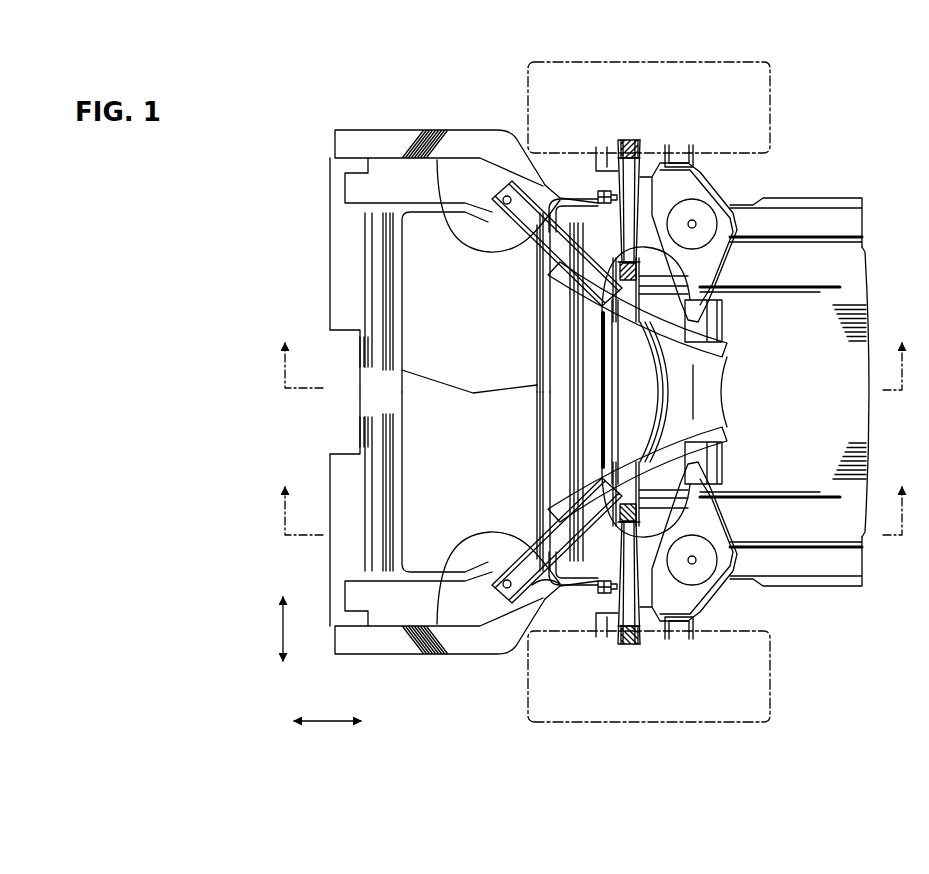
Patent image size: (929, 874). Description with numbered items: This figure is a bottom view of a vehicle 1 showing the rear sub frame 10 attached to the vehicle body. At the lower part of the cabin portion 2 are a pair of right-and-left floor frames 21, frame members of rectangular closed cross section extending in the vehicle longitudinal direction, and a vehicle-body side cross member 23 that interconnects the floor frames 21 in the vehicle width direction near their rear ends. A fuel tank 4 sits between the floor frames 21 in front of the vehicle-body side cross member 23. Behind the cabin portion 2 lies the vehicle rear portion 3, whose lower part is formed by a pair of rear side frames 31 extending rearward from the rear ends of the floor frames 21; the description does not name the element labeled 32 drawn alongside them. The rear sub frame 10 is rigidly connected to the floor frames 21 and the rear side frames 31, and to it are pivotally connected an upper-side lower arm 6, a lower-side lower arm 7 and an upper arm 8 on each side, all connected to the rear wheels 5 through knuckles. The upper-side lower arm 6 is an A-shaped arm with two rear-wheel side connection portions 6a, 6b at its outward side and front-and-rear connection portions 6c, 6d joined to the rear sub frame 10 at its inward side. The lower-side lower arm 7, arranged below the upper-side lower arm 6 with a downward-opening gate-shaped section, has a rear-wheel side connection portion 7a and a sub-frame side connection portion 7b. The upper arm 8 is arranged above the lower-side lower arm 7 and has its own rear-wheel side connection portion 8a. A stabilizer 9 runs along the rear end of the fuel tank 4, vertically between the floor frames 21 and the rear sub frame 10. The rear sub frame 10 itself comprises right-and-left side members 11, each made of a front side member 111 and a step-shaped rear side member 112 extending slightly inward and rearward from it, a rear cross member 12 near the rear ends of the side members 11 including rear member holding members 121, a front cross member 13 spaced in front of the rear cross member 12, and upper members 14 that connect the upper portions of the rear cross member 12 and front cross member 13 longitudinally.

The vehicle 1 is at (277, 95).
The cabin portion 2 is at (439, 393).
The floor frames 21 is at (393, 152).
The vehicle-body side cross member 23 is at (342, 445).
The vehicle rear portion 3 is at (799, 393).
The rear side frames 31 is at (811, 207).
The cross member 32 is at (828, 395).
The fuel tank 4 is at (417, 317).
The rear wheels 5 is at (772, 82).
The upper-side lower arm 6 is at (720, 187).
The rear-wheel side connection portion 6a is at (597, 163).
The rear-wheel side connection portion 6b is at (695, 163).
The front connection portion 6c is at (525, 218).
The rear connection portion 6d is at (698, 307).
The lower-side lower arm 7 is at (609, 186).
The rear-wheel side connection portion 7a is at (645, 145).
The sub-frame side connection portion 7b is at (613, 300).
The upper arm 8 is at (629, 137).
The rear-wheel side connection portion 8a is at (617, 147).
The stabilizer 9 is at (547, 199).
The rear sub frame 10 is at (532, 585).
The side members 11 is at (619, 393).
The front side member 111 is at (437, 160).
The rear side member 112 is at (720, 350).
The rear cross member 12 is at (712, 388).
The rear member holding members 121 is at (718, 333).
The front cross member 13 is at (623, 392).
The upper members 14 is at (654, 273).